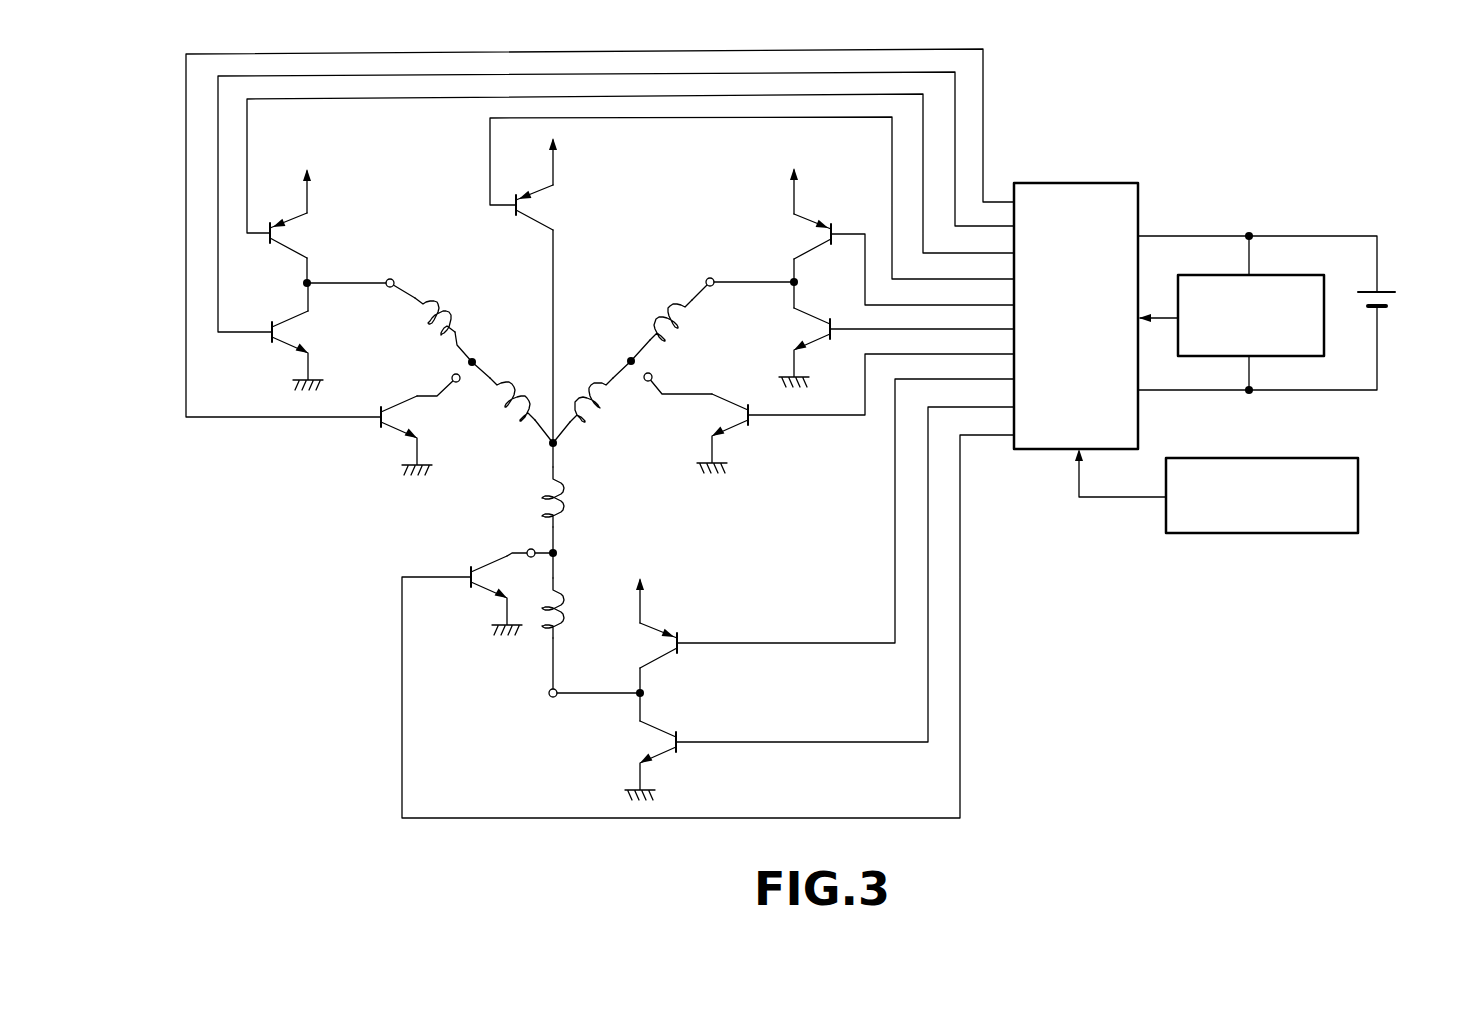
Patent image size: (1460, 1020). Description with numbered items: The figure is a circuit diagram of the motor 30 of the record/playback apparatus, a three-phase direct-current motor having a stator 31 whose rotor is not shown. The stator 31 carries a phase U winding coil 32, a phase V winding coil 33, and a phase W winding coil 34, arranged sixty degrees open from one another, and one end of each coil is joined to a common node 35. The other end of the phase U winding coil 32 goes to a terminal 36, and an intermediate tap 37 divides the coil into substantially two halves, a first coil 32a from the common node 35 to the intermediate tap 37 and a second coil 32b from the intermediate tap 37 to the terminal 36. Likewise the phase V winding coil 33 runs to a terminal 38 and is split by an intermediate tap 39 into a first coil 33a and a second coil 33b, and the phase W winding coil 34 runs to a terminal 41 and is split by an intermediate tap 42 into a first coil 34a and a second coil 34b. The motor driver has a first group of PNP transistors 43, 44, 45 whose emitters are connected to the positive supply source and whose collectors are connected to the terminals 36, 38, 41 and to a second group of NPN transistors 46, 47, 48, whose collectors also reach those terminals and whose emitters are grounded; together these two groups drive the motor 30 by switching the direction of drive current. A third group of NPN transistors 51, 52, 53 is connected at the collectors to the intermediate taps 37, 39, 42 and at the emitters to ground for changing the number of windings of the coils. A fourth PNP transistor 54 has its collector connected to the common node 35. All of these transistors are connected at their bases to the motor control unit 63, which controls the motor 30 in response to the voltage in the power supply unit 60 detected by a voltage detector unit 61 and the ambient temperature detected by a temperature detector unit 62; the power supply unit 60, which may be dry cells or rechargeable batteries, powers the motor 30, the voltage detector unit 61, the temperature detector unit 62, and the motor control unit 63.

The motor 30 is at (1064, 93).
The stator 31 is at (558, 438).
The phase U winding coil 32 is at (471, 340).
The first coil 32a is at (512, 377).
The second coil 32b is at (436, 300).
The phase V winding coil 33 is at (631, 340).
The first coil 33a is at (592, 379).
The second coil 33b is at (658, 306).
The phase W winding coil 34 is at (634, 540).
The first coil 34a is at (571, 500).
The second coil 34b is at (571, 608).
The common node 35 is at (558, 442).
The terminal 36 is at (390, 279).
The intermediate tap 37 is at (452, 377).
The terminal 38 is at (709, 277).
The intermediate tap 39 is at (652, 376).
The terminal 41 is at (550, 695).
The intermediate tap 42 is at (529, 550).
The first transistor 43 is at (300, 221).
The first transistor 44 is at (817, 219).
The first transistor 45 is at (684, 640).
The second transistor 46 is at (270, 336).
The second transistor 47 is at (828, 342).
The second transistor 48 is at (680, 750).
The third transistor 51 is at (379, 422).
The third transistor 52 is at (752, 425).
The third transistor 53 is at (470, 583).
The fourth transistor 54 is at (546, 186).
The power supply unit 60 is at (1385, 292).
The voltage detector unit 61 is at (1295, 275).
The temperature detector unit 62 is at (1318, 458).
The motor control unit 63 is at (1099, 183).